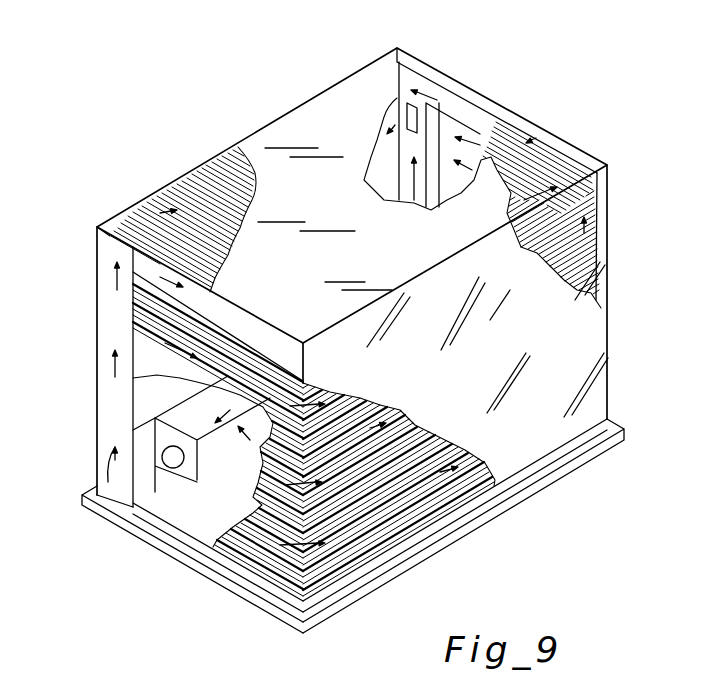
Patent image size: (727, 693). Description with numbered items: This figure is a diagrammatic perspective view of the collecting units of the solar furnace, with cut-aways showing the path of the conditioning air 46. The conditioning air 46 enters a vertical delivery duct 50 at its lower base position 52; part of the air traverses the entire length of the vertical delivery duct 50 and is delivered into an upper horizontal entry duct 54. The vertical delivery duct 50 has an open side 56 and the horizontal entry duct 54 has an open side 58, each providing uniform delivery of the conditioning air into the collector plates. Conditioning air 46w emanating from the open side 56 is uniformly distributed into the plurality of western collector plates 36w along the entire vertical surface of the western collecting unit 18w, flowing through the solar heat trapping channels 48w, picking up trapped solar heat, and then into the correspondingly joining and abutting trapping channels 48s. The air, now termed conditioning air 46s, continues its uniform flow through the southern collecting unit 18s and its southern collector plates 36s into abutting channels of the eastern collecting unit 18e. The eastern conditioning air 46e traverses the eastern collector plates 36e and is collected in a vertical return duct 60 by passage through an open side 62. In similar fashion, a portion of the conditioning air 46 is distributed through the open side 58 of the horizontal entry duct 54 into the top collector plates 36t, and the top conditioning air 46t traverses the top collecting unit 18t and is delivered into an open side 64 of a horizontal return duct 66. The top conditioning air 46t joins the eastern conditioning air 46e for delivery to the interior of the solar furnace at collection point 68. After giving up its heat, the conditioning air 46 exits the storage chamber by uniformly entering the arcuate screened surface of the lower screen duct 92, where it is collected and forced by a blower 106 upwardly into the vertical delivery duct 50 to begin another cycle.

The top collecting unit 18t is at (300, 123).
The eastern collecting unit 18e is at (484, 80).
The southern collecting unit 18s is at (594, 387).
The western collecting unit 18w is at (187, 537).
The top collector plates 36t is at (220, 180).
The eastern collector plates 36e is at (612, 288).
The western collector plates 36w is at (240, 557).
The southern collector plates 36s is at (434, 512).
The conditioning air 46 is at (115, 273).
The top conditioning air flow 46t is at (158, 213).
The eastern conditioning air flow 46e is at (474, 147).
The western conditioning air flow 46w is at (170, 335).
The southern conditioning air flow 46s is at (440, 474).
The western solar heat trapping channels 48w is at (265, 580).
The southern trapping channels 48s is at (345, 562).
The vertical delivery duct 50 is at (115, 408).
The lower base position 52 is at (110, 478).
The horizontal entry duct 54 is at (220, 312).
The open side of vertical delivery duct 56 is at (140, 332).
The open side of horizontal entry duct 58 is at (157, 237).
The vertical return duct 60 is at (410, 170).
The open side of vertical return duct 62 is at (432, 200).
The open side of horizontal return duct 64 is at (492, 127).
The horizontal return duct 66 is at (430, 65).
The collection point 68 is at (395, 92).
The lower screen duct 92 is at (203, 457).
The blower 106 is at (157, 488).